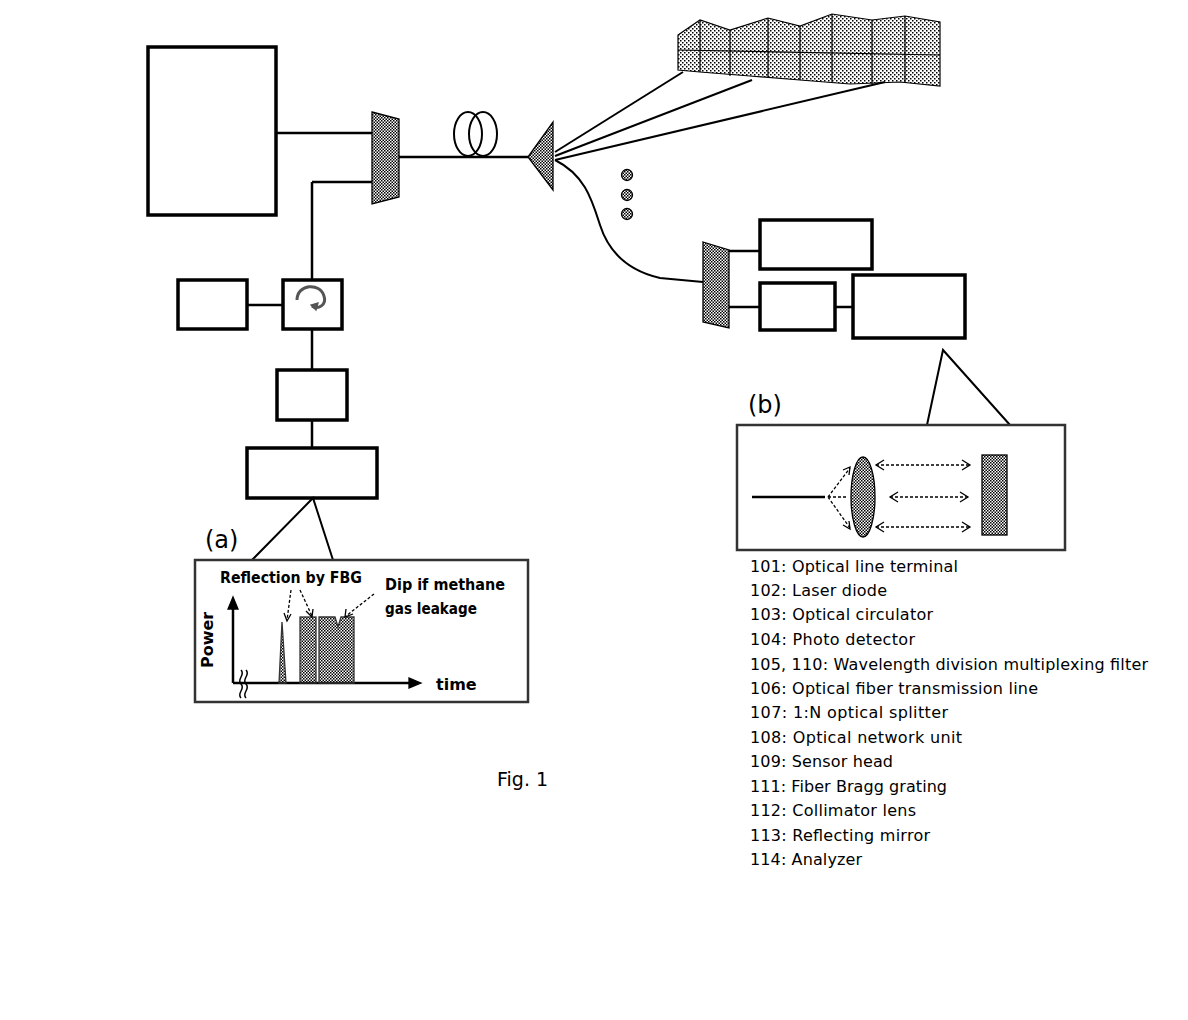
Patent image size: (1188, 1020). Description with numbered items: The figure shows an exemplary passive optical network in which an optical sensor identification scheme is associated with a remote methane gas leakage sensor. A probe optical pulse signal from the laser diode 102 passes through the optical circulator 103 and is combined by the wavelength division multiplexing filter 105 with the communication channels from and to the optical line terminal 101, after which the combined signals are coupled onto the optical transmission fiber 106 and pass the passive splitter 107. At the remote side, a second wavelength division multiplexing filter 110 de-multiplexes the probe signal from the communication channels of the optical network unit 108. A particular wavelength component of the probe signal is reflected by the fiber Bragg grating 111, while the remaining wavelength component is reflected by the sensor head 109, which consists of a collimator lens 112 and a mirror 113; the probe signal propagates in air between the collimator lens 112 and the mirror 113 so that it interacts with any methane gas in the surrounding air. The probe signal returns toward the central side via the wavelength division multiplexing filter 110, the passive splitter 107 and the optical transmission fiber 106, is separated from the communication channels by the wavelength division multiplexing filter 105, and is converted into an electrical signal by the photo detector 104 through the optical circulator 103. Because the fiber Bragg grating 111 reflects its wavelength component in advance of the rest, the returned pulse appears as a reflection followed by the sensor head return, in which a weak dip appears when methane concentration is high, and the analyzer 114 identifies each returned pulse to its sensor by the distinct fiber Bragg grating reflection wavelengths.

The optical line terminal 101 is at (262, 70).
The laser diode 102 is at (235, 288).
The optical circulator 103 is at (338, 290).
The photo detector 104 is at (338, 372).
The wavelength division multiplexing filter 105 is at (396, 119).
The optical transmission fiber 106 is at (485, 128).
The passive splitter 107 is at (552, 128).
The optical network unit 108 is at (862, 240).
The sensor head 109 is at (953, 302).
The wavelength division multiplexing filter 110 is at (728, 248).
The fiber Bragg grating 111 is at (762, 328).
The collimator lens 112 is at (864, 460).
The mirror 113 is at (992, 462).
The analyzer 114 is at (368, 456).